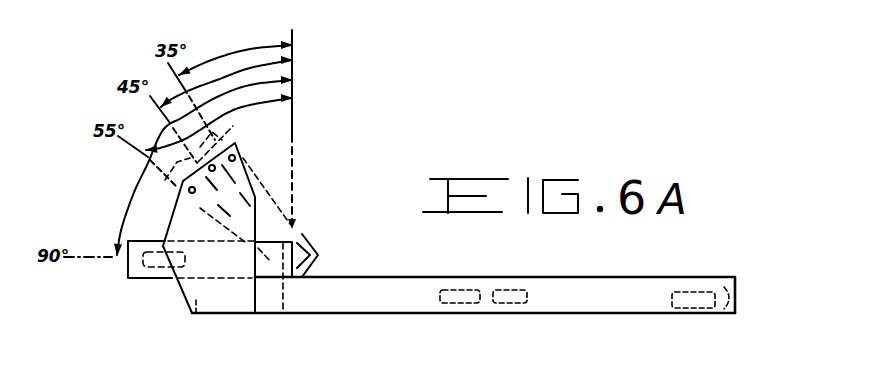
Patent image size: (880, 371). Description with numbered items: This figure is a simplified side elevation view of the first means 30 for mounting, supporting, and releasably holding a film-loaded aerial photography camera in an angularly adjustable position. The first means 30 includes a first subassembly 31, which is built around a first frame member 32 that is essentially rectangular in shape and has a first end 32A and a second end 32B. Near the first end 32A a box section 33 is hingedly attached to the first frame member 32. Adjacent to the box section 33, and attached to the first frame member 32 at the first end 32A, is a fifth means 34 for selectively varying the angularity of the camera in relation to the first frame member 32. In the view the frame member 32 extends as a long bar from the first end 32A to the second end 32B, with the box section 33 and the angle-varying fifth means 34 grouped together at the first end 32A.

The first means for mounting, supporting, and releasably holding the camera 30 is at (402, 153).
The first subassembly 31 is at (563, 323).
The first frame member 32 is at (390, 313).
The first end 32A is at (192, 296).
The second end 32B is at (786, 262).
The box section 33 is at (128, 268).
The fifth means for selectively varying angularity 34 is at (196, 226).